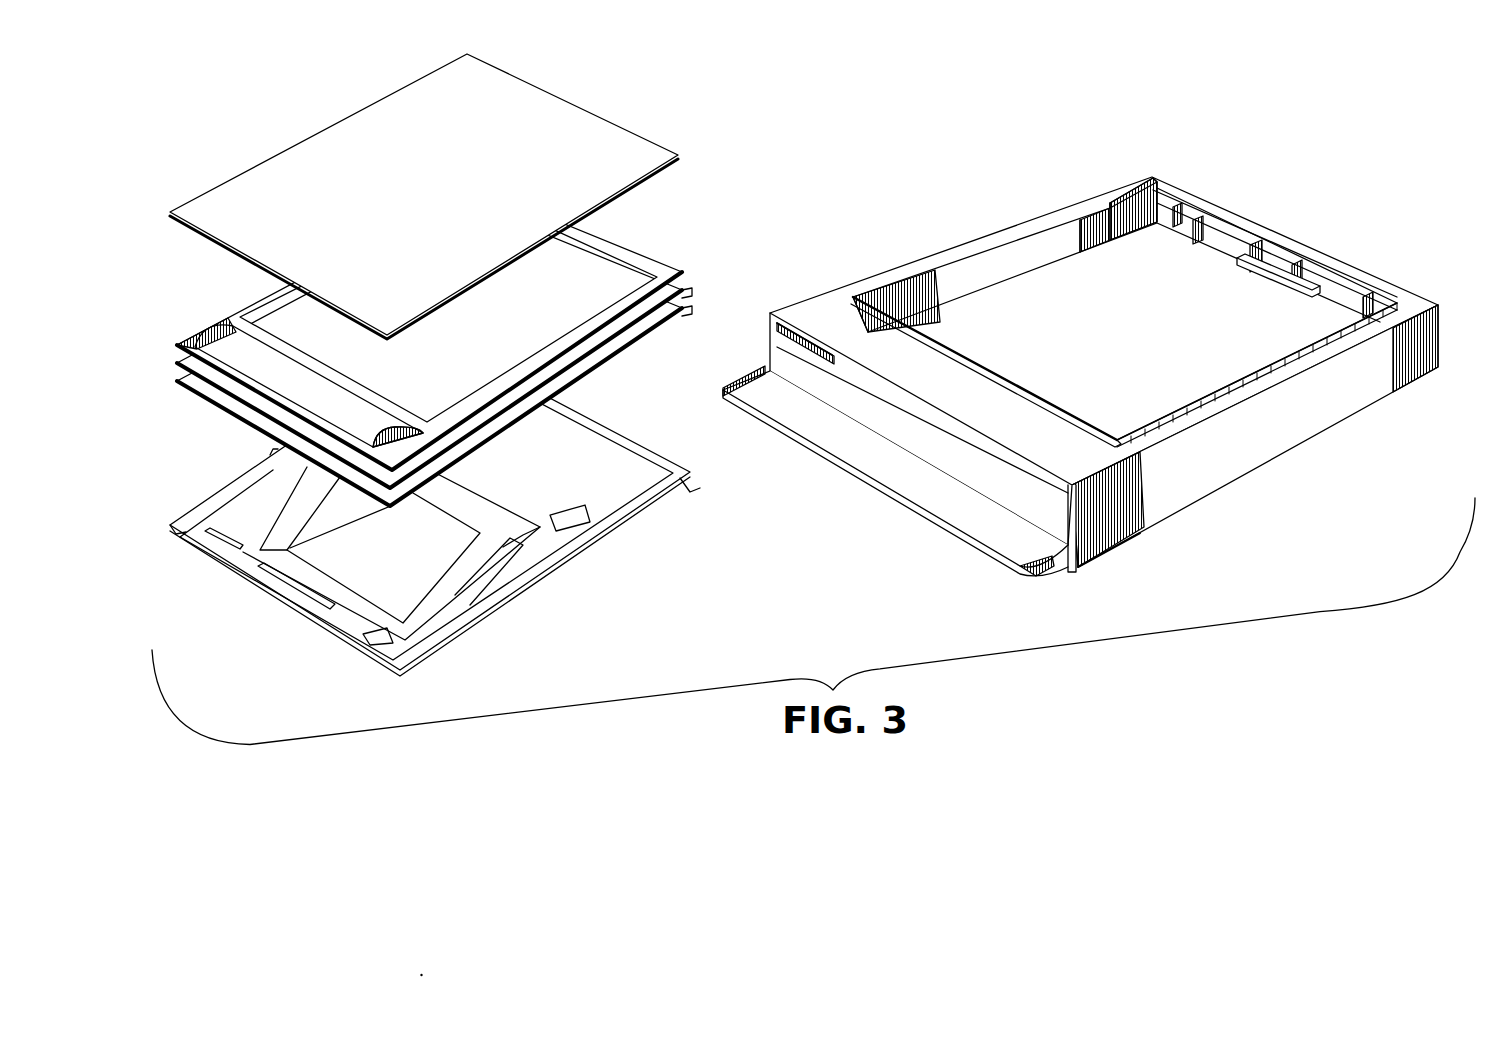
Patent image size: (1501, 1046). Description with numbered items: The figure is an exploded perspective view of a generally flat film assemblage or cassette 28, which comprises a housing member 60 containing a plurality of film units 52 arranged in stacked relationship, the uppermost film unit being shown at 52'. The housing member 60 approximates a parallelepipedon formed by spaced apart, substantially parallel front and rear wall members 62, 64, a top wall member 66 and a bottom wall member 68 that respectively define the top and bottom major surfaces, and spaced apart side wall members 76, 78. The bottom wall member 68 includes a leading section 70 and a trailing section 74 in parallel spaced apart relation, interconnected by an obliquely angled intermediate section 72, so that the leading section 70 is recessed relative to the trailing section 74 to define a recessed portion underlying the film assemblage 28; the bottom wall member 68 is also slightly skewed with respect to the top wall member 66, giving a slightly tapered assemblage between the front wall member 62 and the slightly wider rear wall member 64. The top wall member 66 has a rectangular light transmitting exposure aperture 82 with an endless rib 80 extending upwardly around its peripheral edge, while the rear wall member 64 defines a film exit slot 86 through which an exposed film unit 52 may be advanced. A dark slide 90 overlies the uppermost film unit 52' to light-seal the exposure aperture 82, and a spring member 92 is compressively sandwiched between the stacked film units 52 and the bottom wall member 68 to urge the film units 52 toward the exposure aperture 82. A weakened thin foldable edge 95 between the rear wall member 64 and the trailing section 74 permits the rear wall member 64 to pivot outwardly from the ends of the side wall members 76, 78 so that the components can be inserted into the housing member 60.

The film assemblage 28 is at (698, 135).
The film units 52 is at (455, 355).
The uppermost film unit 52' is at (436, 328).
The housing member 60 is at (1102, 371).
The front wall member 62 is at (1338, 292).
The rear wall member 64 is at (1007, 548).
The top wall member 66 is at (868, 300).
The bottom wall member 68 is at (1226, 477).
The leading section 70 is at (1375, 385).
The intermediate section 72 is at (1142, 530).
The trailing section 74 is at (1120, 548).
The side wall member 76 is at (1272, 428).
The side wall member 78 is at (1123, 178).
The endless rib 80 is at (1305, 348).
The exposure aperture 82 is at (975, 358).
The film exit slot 86 is at (790, 320).
The dark slide 90 is at (553, 92).
The spring member 92 is at (628, 430).
The foldable edge 95 is at (1078, 575).